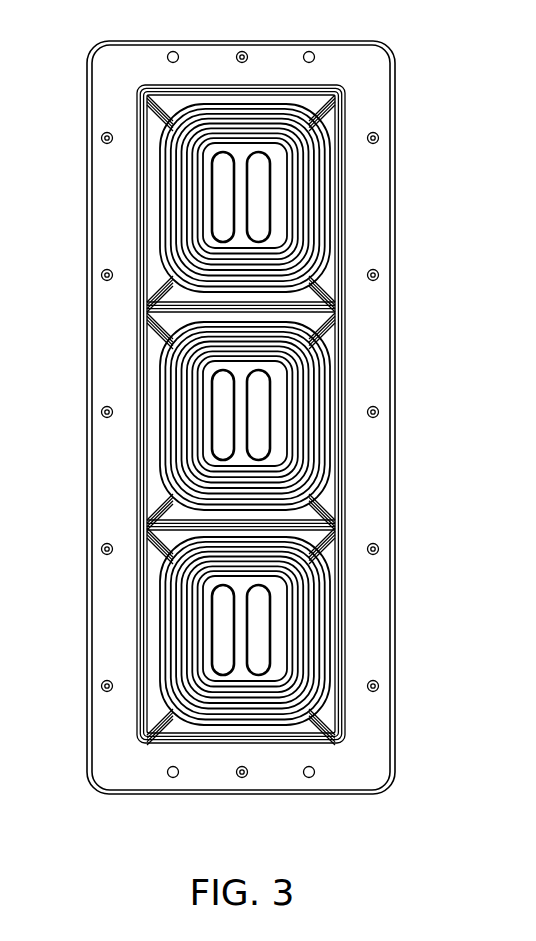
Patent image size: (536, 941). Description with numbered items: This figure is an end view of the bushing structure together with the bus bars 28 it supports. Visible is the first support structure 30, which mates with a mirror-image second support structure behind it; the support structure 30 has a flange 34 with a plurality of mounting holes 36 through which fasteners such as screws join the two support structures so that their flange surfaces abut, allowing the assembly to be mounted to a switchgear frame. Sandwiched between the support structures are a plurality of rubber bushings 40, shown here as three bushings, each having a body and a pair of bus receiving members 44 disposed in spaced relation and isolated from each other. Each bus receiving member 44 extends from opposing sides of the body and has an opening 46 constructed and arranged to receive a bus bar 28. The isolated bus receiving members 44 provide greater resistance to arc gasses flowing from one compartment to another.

The bus bar 28 is at (253, 228).
The first support structure 30 is at (352, 72).
The flange 34 is at (377, 218).
The mounting holes 36 is at (377, 408).
The bushing 40 is at (242, 149).
The bus receiving member 44 is at (273, 163).
The opening 46 is at (270, 458).